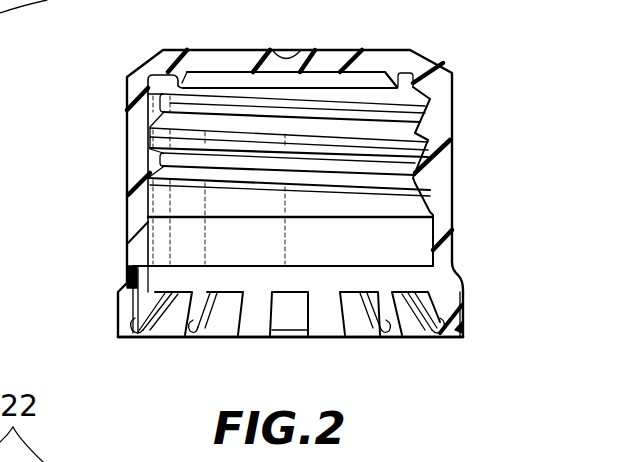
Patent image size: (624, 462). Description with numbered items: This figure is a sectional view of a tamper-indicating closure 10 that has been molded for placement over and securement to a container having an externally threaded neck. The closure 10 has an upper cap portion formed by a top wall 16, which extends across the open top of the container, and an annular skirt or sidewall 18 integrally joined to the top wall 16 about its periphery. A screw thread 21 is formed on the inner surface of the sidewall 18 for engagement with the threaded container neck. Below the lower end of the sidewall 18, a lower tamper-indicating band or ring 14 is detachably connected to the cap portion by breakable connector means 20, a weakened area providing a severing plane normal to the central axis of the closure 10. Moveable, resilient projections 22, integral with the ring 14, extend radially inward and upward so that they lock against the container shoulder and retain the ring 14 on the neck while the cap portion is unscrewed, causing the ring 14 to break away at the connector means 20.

The tamper-indicating closure 10 is at (118, 158).
The tamper-indicating band or ring 14 is at (463, 330).
The top wall 16 is at (330, 63).
The annular skirt or sidewall 18 is at (442, 168).
The breakable connector means 20 is at (455, 270).
The screw thread 21 is at (323, 135).
The moveable, resilient projections 22 is at (223, 330).